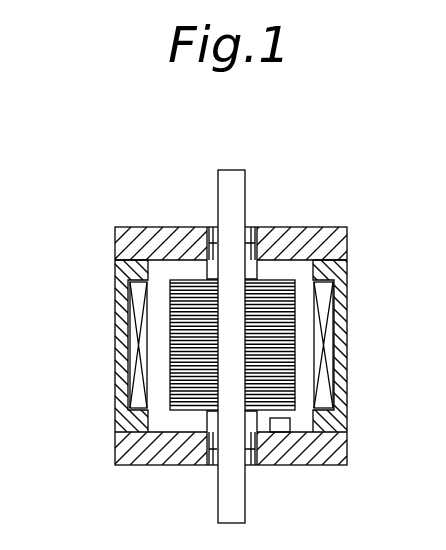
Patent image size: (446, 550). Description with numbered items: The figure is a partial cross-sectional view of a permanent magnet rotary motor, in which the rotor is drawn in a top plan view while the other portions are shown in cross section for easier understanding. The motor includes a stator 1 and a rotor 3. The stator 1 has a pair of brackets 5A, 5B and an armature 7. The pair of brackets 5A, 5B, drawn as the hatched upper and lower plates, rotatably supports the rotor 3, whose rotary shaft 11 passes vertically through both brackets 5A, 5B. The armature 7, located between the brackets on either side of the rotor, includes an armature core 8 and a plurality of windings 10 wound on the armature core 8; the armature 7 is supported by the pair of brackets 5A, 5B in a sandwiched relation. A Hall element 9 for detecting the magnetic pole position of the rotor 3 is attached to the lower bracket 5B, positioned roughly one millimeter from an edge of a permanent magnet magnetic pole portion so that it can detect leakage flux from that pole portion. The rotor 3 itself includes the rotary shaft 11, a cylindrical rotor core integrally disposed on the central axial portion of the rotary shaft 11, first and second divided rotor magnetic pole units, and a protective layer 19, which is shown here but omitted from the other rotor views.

The stator 1 is at (104, 233).
The rotor 3 is at (268, 275).
The bracket 5A is at (140, 242).
The bracket 5B is at (155, 455).
The armature 7 is at (104, 323).
The armature core 8 is at (117, 348).
The Hall element 9 is at (279, 436).
The windings 10 is at (138, 390).
The rotary shaft 11 is at (217, 197).
The protective layer 19 is at (284, 292).